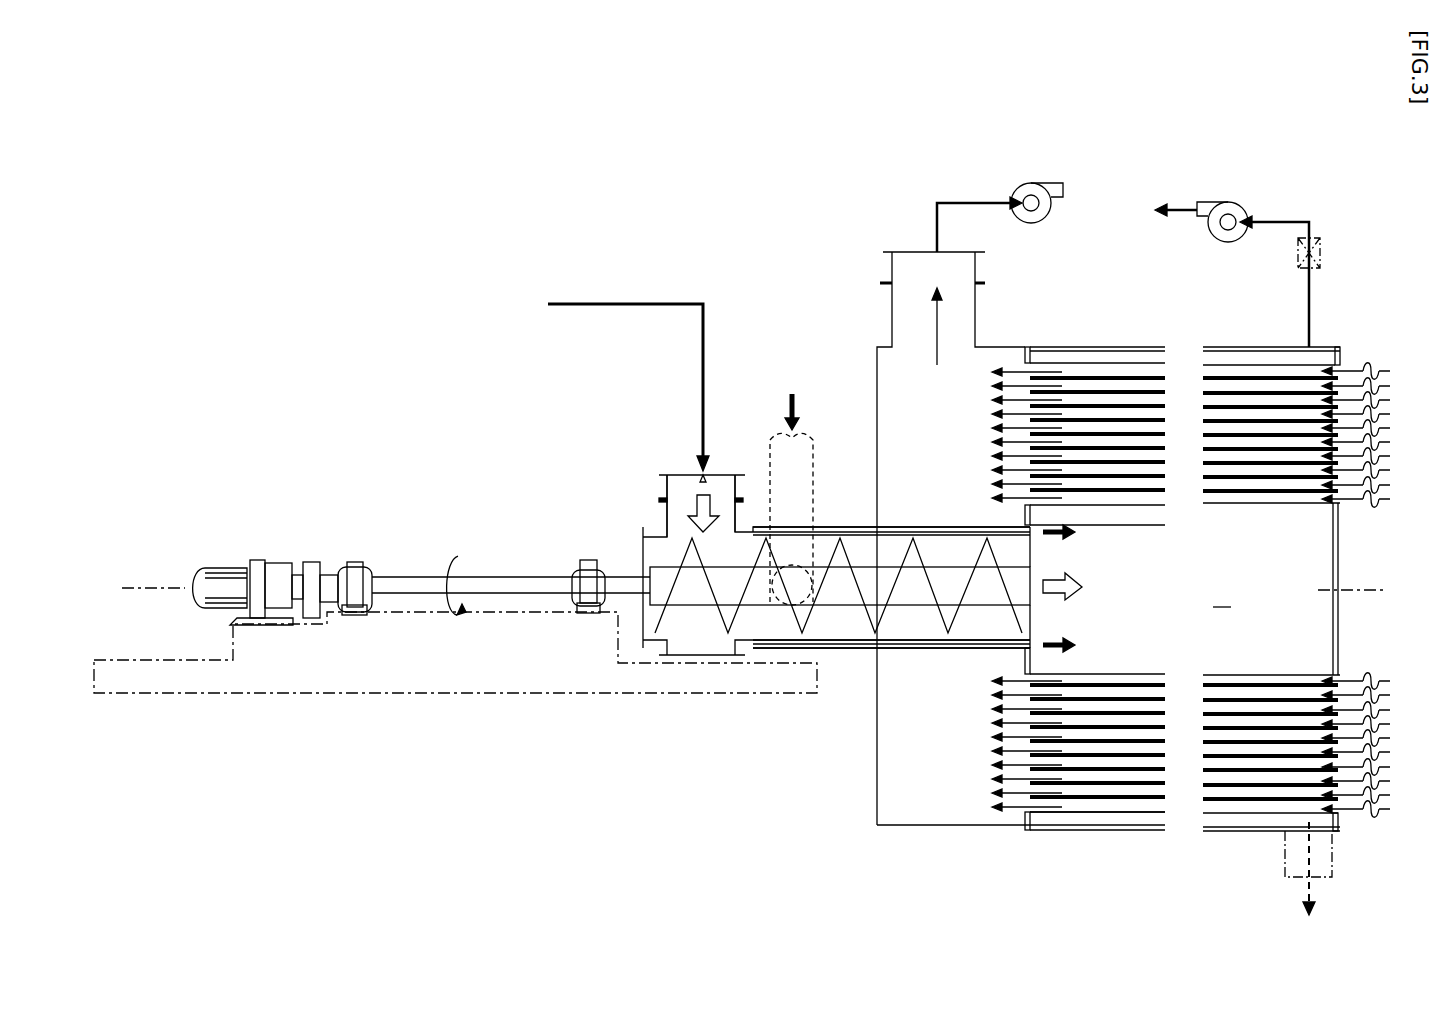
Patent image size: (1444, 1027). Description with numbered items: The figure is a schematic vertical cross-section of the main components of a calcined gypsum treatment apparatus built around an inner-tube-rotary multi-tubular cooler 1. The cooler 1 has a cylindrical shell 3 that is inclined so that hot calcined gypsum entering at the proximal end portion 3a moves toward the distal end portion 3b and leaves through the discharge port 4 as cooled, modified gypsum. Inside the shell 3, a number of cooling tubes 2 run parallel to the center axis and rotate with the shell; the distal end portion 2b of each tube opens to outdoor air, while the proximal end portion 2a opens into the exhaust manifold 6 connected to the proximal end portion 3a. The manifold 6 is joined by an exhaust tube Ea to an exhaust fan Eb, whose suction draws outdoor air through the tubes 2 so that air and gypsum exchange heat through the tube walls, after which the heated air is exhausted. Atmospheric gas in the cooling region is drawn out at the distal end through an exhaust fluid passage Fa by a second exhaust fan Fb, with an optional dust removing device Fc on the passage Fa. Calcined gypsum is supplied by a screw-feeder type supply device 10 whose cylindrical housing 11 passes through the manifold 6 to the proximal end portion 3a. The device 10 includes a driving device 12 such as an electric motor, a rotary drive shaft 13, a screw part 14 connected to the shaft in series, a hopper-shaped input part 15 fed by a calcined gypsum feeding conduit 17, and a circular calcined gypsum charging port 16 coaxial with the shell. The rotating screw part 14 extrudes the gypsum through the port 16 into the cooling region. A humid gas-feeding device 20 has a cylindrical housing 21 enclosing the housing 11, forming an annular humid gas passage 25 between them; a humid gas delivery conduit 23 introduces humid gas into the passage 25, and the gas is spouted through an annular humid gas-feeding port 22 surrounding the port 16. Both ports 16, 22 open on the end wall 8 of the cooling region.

The multi-tubular cooler 1 is at (1115, 200).
The cooling tubes 2 is at (1283, 503).
The proximal end portion of the tube 2a is at (1025, 808).
The distal end portion of the tube 2b is at (1340, 503).
The cylindrical shell 3 is at (1140, 347).
The proximal end portion of the shell 3a is at (1030, 832).
The distal end portion of the shell 3b is at (1338, 832).
The discharge port 4 is at (1285, 858).
The exhaust manifold 6 is at (877, 363).
The end wall of the cooling region 8 is at (1030, 665).
The calcined gypsum supply device 10 is at (279, 499).
The cylindrical housing 11 is at (655, 533).
The driving device 12 is at (226, 565).
The rotary drive shaft 13 is at (497, 585).
The screw part 14 is at (920, 598).
The input part 15 is at (737, 517).
The calcined gypsum charging port 16 is at (1028, 555).
The calcined gypsum feeding conduit 17 is at (666, 492).
The humid gas-feeding device 20 is at (849, 652).
The cylindrical housing 21 is at (952, 520).
The humid gas-feeding port 22 is at (1032, 527).
The humid gas delivery conduit 23 is at (770, 445).
The annular humid gas passage 25 is at (903, 520).
The exhaust tube Ea is at (937, 212).
The exhaust fan Eb is at (1031, 185).
The exhaust fluid passage Fa is at (1312, 296).
The exhaust fan Fb is at (1233, 206).
The dust removing device Fc is at (1322, 256).